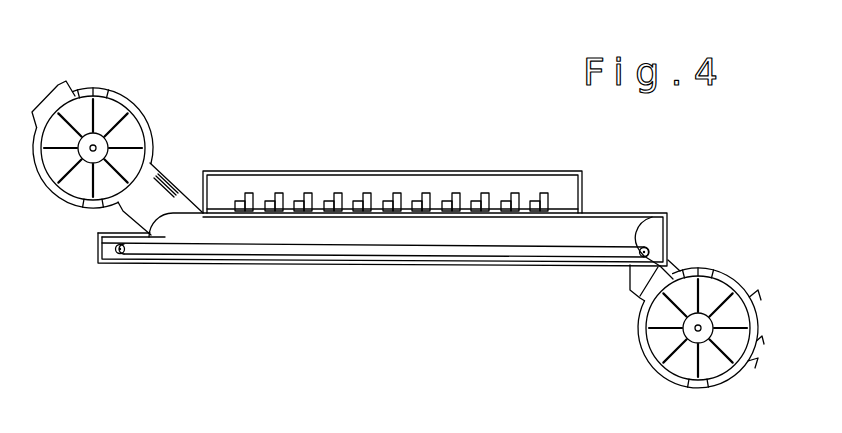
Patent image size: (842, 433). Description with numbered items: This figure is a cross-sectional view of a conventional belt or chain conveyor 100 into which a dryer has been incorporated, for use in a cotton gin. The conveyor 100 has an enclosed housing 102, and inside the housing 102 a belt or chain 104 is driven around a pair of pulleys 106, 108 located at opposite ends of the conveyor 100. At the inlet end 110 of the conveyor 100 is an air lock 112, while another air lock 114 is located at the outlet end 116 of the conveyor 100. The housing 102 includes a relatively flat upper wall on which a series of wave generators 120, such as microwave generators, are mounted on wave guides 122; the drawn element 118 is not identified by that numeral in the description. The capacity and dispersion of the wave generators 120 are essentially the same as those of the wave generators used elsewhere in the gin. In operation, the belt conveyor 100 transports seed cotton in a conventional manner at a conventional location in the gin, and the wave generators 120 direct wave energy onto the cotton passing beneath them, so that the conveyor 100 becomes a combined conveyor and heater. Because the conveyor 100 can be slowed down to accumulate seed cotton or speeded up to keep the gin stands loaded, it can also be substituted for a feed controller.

The belt or chain conveyor 100 is at (390, 80).
The enclosed housing 102 is at (114, 265).
The belt or chain 104 is at (232, 242).
The pulley 106 is at (123, 252).
The pulley 108 is at (667, 216).
The inlet end 110 is at (48, 90).
The air lock 112 is at (146, 86).
The air lock 114 is at (750, 280).
The outlet end 116 is at (756, 362).
The circuit board 118 is at (243, 214).
The wave generators 120 is at (247, 199).
The wave guides 122 is at (380, 205).